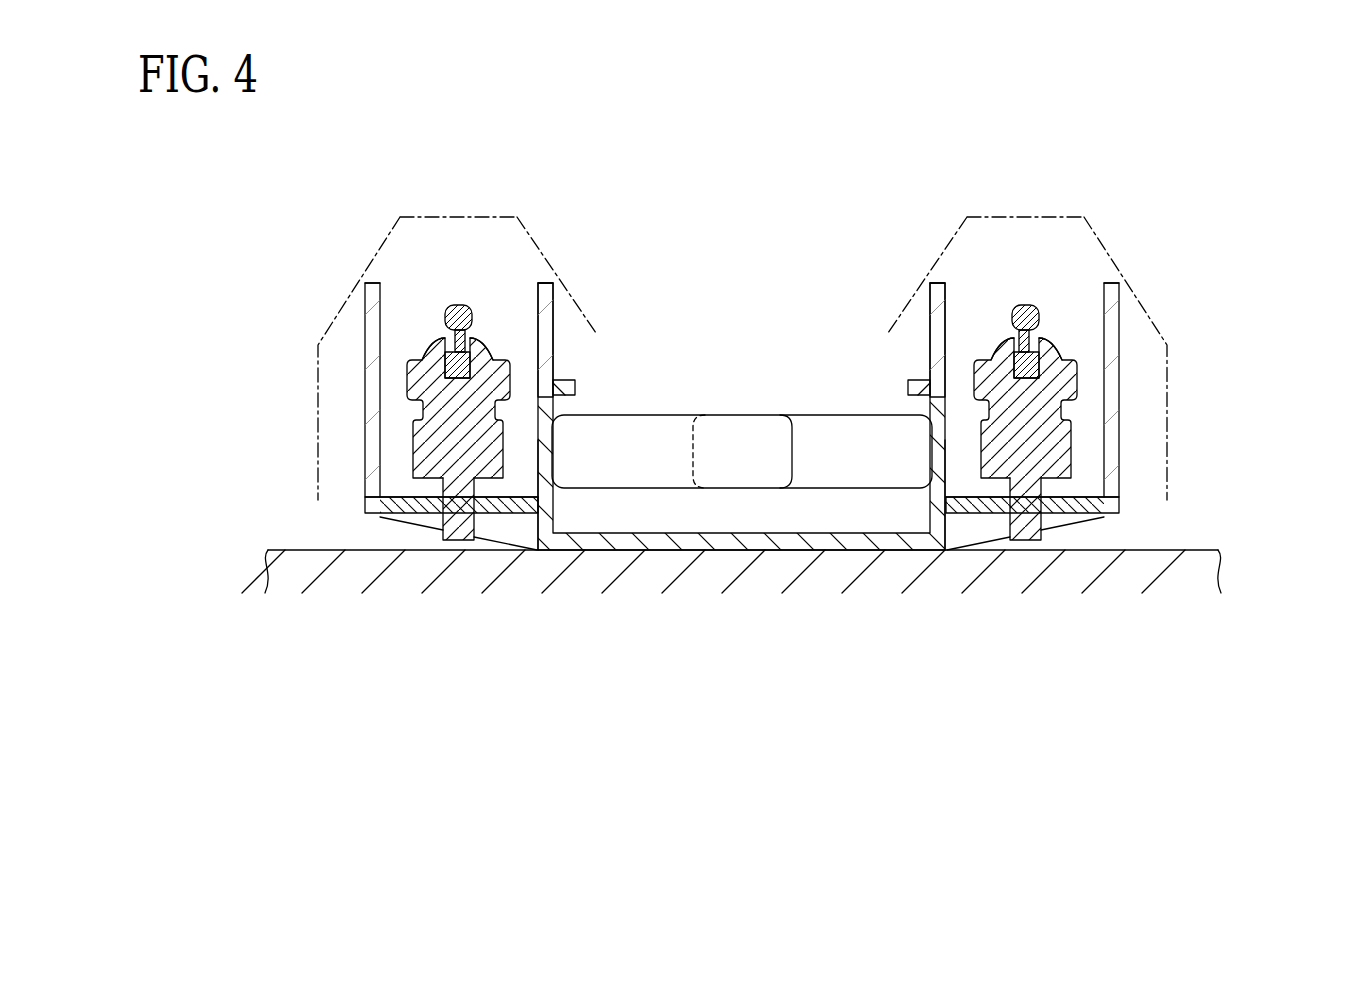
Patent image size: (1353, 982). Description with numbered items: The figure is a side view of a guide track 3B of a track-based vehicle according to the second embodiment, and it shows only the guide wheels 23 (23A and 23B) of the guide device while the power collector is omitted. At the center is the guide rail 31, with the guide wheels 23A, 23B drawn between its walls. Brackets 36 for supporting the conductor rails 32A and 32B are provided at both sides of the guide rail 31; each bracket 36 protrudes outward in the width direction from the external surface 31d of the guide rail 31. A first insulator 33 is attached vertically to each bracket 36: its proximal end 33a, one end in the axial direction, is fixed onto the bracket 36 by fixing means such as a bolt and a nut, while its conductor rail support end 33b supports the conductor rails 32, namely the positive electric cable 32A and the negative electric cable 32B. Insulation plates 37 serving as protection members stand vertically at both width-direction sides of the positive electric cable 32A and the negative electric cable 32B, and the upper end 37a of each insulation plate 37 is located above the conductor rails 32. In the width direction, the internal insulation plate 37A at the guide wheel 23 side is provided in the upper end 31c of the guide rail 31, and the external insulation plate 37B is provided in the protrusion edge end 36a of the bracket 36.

The guide track 3B is at (1110, 248).
The guide wheels 23 is at (742, 567).
The guide wheel 23A is at (817, 488).
The guide wheel 23B is at (718, 545).
The guide rail 31 is at (742, 479).
The upper end of the guide rail 31c is at (556, 378).
The external surface of the guide rail 31d is at (538, 468).
The conductor rails 32 is at (742, 242).
The positive electric cable 32A is at (446, 320).
The negative electric cable 32B is at (1042, 318).
The first insulator 33 is at (742, 417).
The proximal end 33a is at (452, 520).
The conductor rail support end 33b is at (432, 343).
The bracket 36 is at (742, 560).
The protrusion edge end 36a is at (372, 495).
The insulation plates 37 is at (738, 301).
The internal insulation plate 37A is at (553, 323).
The external insulation plate 37B is at (367, 332).
The upper end of the insulation plate 37a is at (368, 283).